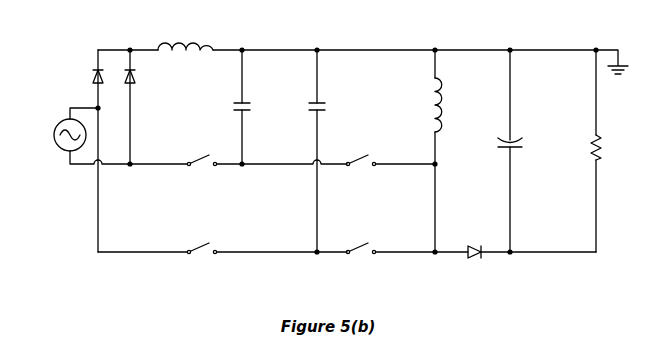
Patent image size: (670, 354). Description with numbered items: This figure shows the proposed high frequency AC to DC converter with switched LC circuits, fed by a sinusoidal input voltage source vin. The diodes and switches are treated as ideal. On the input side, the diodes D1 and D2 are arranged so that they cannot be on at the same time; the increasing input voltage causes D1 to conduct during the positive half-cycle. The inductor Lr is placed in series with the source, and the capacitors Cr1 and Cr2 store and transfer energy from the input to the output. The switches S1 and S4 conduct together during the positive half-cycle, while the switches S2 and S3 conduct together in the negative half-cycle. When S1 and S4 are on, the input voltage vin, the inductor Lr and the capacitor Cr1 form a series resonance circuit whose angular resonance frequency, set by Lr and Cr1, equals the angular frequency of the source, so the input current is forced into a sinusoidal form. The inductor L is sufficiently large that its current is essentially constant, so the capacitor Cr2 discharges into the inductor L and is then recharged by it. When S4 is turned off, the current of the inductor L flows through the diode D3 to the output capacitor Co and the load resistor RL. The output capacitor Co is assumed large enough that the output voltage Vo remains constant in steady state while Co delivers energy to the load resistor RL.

The sinusoidal input voltage source vin is at (56, 135).
The diode D1 is at (83, 78).
The diode D2 is at (141, 78).
The inductor Lr is at (185, 34).
The capacitor Cr1 is at (256, 109).
The capacitor Cr2 is at (331, 109).
The switch S1 is at (201, 151).
The switch S2 is at (201, 239).
The switch S3 is at (360, 151).
The switch S4 is at (360, 239).
The inductor L is at (445, 105).
The diode D3 is at (472, 263).
The output capacitor Co is at (520, 148).
The output voltage Vo is at (576, 187).
The output load resistor RL is at (605, 148).